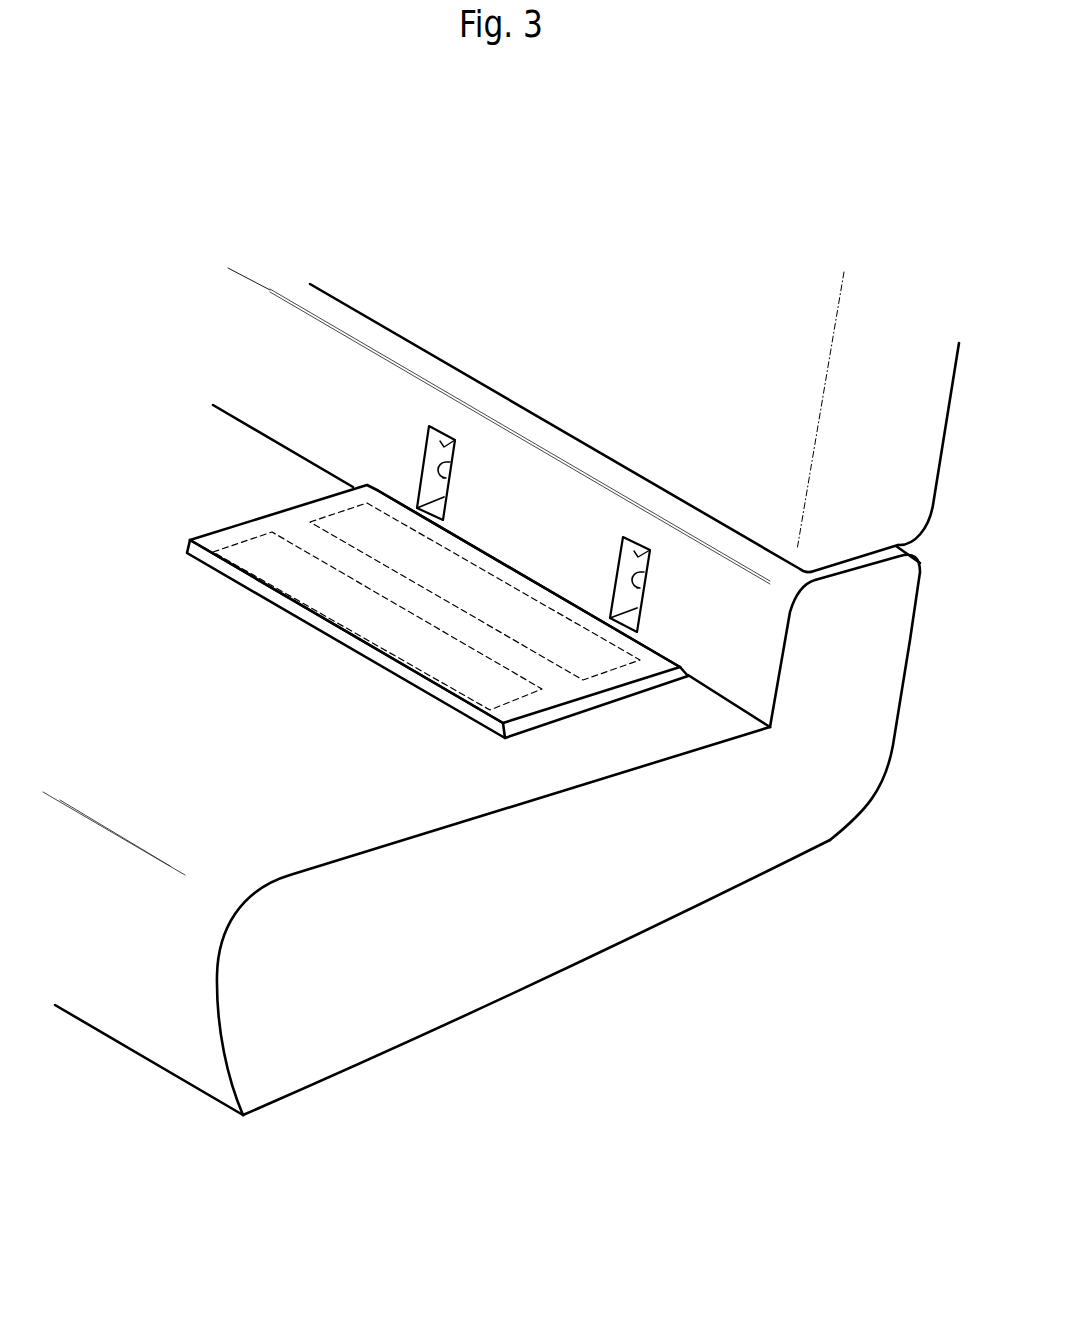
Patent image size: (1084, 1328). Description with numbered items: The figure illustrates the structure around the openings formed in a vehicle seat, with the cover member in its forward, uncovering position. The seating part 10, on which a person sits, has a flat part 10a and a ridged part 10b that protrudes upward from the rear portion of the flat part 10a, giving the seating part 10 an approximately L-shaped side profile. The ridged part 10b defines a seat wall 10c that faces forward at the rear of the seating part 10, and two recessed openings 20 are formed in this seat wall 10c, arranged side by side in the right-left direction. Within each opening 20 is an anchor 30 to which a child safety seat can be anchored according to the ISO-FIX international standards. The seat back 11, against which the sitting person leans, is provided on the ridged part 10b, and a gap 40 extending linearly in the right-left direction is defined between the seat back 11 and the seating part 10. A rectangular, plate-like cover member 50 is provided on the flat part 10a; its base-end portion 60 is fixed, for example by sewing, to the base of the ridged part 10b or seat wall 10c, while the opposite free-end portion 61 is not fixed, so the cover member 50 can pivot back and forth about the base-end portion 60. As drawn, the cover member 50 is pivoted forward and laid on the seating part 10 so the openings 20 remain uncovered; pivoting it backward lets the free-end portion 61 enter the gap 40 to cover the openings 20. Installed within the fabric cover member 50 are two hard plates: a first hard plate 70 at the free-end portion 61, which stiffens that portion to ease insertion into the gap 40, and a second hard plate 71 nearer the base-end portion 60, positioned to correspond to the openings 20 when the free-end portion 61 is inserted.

The seating part 10 is at (481, 760).
The flat part 10a is at (352, 830).
The ridged part 10b is at (730, 678).
The seat wall 10c is at (737, 620).
The seat back 11 is at (678, 282).
The opening 20 is at (575, 470).
The anchor 30 is at (447, 473).
The gap 40 is at (617, 475).
The cover member 50 is at (416, 551).
The base-end portion 60 is at (535, 592).
The free-end portion 61 is at (357, 630).
The first hard plate 70 is at (392, 537).
The second hard plate 71 is at (350, 513).